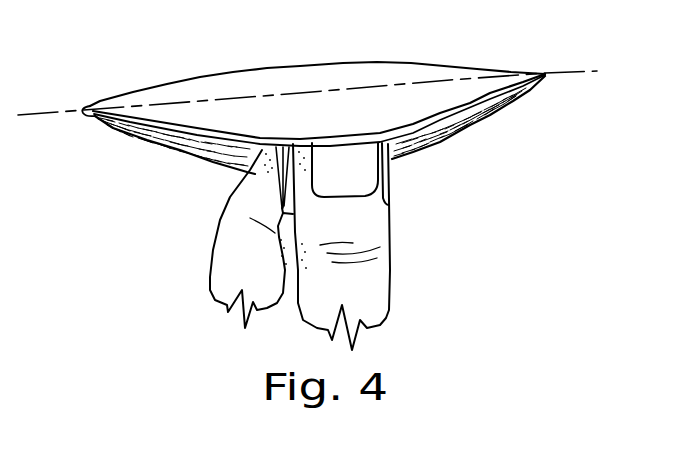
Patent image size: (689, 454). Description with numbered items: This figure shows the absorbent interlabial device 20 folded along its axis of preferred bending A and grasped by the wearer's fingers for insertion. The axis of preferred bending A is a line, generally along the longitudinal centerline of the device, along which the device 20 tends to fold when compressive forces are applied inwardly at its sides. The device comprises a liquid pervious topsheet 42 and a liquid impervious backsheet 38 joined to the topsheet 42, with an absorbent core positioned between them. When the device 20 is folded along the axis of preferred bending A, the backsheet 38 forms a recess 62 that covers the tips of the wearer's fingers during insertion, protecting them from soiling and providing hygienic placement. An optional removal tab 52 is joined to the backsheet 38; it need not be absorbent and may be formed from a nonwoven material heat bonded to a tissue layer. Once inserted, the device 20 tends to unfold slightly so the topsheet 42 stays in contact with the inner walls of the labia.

The absorbent interlabial device 20 is at (153, 69).
The liquid pervious topsheet 42 is at (442, 74).
The liquid impervious backsheet 38 is at (150, 145).
The removal tab 52 is at (287, 163).
The recess 62 is at (434, 125).
The axis of preferred bending A is at (563, 72).